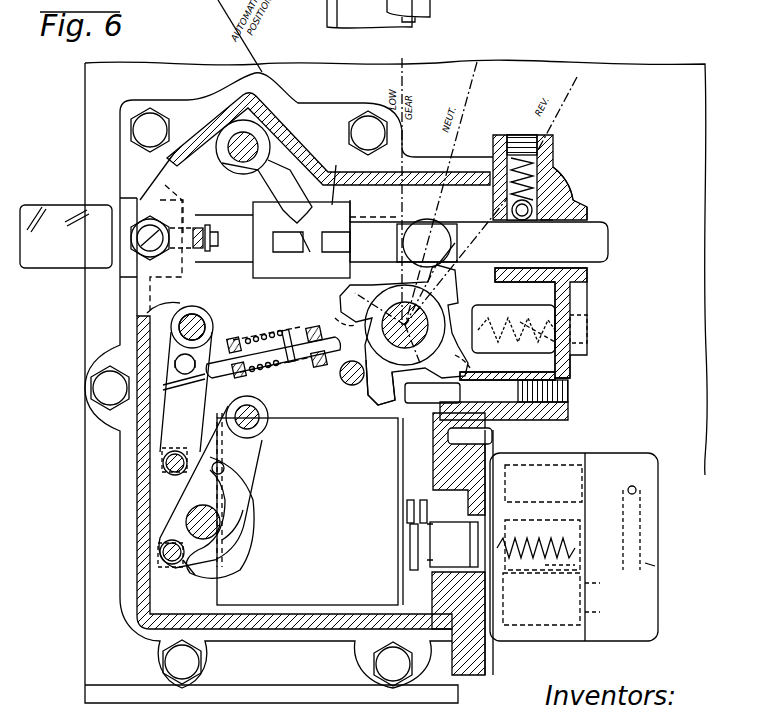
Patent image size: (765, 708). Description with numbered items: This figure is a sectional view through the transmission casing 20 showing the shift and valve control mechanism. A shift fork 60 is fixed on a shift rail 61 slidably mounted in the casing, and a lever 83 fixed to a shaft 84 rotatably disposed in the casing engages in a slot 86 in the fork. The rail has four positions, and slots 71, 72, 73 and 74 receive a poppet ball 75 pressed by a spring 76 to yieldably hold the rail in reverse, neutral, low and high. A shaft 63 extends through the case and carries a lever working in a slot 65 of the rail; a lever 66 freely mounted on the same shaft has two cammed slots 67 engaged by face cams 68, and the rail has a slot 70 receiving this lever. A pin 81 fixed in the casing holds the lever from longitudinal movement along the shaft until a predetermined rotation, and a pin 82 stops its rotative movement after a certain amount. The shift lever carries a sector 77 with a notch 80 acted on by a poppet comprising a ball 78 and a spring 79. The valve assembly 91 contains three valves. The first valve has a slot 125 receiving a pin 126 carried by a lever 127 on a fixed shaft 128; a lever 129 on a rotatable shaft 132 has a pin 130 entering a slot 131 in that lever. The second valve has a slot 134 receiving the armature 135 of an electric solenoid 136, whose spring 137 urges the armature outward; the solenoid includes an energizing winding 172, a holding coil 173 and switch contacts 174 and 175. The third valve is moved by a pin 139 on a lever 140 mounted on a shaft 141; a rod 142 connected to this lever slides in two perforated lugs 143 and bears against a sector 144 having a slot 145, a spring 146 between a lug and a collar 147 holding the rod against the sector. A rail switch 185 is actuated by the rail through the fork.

The transmission casing 20 is at (700, 103).
The shift fork 60 is at (341, 176).
The shift rail 61 is at (608, 240).
The shaft 63 is at (366, 395).
The slot 65 is at (373, 222).
The lever 66 is at (443, 240).
The cammed slots 67 is at (352, 304).
The face cams 68 is at (345, 318).
The slot 70 is at (427, 225).
The slot 71 is at (500, 206).
The slot 72 is at (520, 222).
The slot 73 is at (540, 225).
The slot 74 is at (596, 218).
The poppet ball 75 is at (562, 200).
The spring 76 is at (555, 165).
The sector 77 is at (462, 298).
The ball 78 is at (480, 322).
The spring 79 is at (522, 320).
The notch 80 is at (432, 392).
The pin 81 is at (340, 380).
The pin 82 is at (420, 403).
The lever 83 is at (240, 172).
The shaft 84 is at (230, 161).
The slot 86 is at (300, 280).
The valve assembly 91 is at (330, 604).
The slot 125 is at (175, 565).
The pin 126 is at (192, 580).
The lever 127 is at (167, 529).
The shaft 128 is at (258, 427).
The lever 129 is at (210, 495).
The pin 130 is at (224, 468).
The slot 131 is at (240, 522).
The shaft 132 is at (228, 535).
The slot 134 is at (418, 485).
The armature 135 is at (448, 524).
The electric solenoid 136 is at (655, 530).
The spring 137 is at (580, 542).
The pin 139 is at (165, 466).
The lever 140 is at (165, 435).
The shaft 141 is at (180, 330).
The rod 142 is at (222, 333).
The perforated lugs 143 is at (248, 330).
The sector 144 is at (287, 362).
The slot 145 is at (305, 325).
The spring 146 is at (240, 375).
The collar 147 is at (282, 385).
The energizing winding 172 is at (609, 615).
The holding coil 173 is at (609, 588).
The contact 174 is at (630, 560).
The contact 175 is at (655, 566).
The rail switch 185 is at (58, 268).